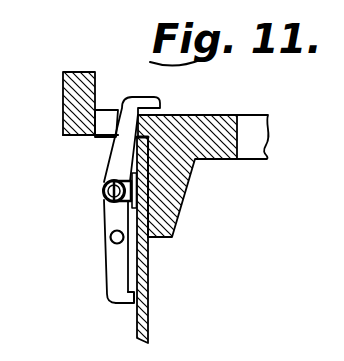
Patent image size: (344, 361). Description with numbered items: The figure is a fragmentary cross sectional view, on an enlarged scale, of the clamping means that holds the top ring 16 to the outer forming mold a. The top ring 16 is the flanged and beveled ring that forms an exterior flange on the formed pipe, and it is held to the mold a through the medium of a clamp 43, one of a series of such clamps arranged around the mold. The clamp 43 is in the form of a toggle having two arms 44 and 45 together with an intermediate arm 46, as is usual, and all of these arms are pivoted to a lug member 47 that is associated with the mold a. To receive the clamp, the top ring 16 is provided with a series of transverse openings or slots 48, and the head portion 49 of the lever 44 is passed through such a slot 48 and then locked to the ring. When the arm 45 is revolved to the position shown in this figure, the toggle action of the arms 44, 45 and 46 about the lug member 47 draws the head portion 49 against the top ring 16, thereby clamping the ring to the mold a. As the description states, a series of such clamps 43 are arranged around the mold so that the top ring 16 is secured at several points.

The top ring 16 is at (142, 133).
The lever 44 is at (118, 144).
The transverse openings or slots 48 is at (108, 117).
The head portion 49 is at (145, 97).
The lug member 47 is at (108, 177).
The intermediate arm 46 is at (105, 213).
The arm 45 is at (118, 270).
The clamp 43 is at (115, 222).
The outer forming mold a is at (148, 283).